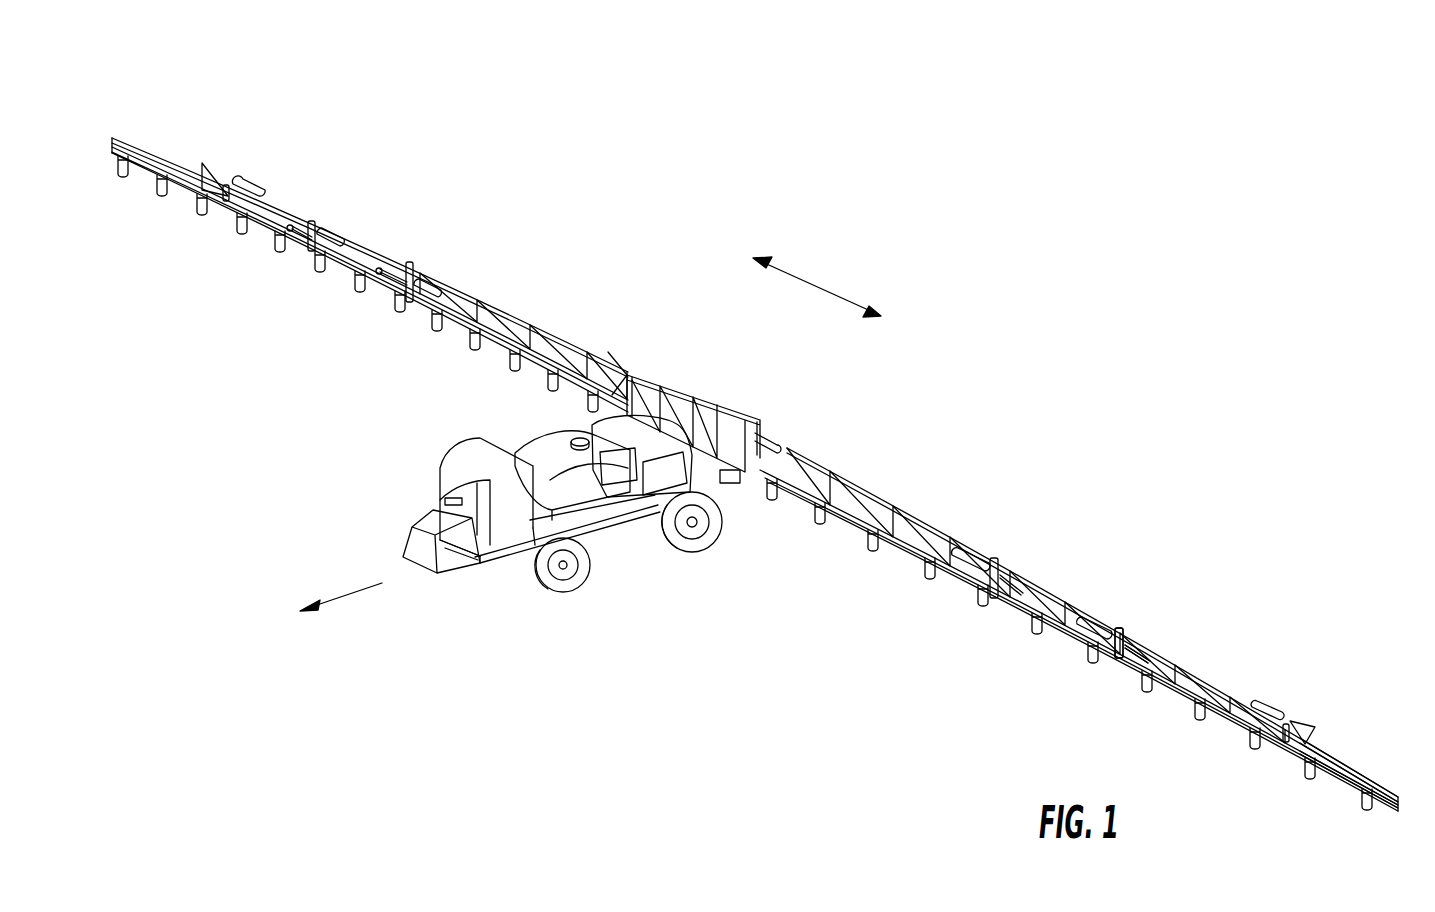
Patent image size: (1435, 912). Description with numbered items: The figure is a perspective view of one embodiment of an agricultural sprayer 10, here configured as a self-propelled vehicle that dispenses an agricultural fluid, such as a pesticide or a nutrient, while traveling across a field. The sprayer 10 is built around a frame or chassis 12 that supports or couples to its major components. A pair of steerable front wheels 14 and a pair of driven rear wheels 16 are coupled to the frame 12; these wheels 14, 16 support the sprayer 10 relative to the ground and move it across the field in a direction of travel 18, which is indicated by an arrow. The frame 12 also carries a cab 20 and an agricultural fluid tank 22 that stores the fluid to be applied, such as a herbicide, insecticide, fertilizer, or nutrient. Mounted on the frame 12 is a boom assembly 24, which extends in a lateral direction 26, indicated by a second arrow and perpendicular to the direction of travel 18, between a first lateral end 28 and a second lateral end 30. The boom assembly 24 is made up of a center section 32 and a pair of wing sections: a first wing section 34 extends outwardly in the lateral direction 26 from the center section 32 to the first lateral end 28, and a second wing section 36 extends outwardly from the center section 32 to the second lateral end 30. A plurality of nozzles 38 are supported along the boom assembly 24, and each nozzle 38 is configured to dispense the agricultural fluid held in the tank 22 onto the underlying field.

The agricultural sprayer 10 is at (176, 120).
The frame 12 is at (605, 542).
The front wheels 14 is at (557, 595).
The rear wheels 16 is at (684, 552).
The direction of travel 18 is at (345, 598).
The cab 20 is at (460, 458).
The agricultural fluid tank 22 is at (553, 443).
The boom assembly 24 is at (812, 425).
The lateral direction 26 is at (812, 278).
The first lateral end 28 is at (1400, 765).
The second lateral end 30 is at (96, 125).
The center section 32 is at (704, 384).
The first wing section 34 is at (1105, 630).
The second wing section 36 is at (292, 225).
The nozzles 38 is at (352, 296).